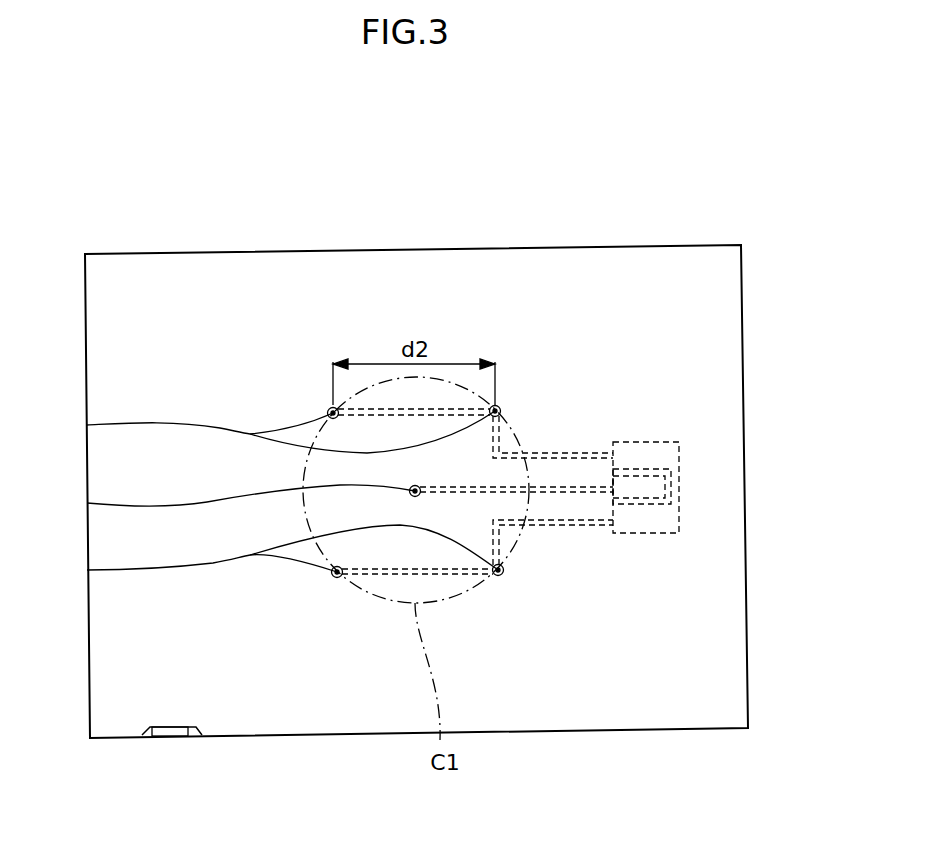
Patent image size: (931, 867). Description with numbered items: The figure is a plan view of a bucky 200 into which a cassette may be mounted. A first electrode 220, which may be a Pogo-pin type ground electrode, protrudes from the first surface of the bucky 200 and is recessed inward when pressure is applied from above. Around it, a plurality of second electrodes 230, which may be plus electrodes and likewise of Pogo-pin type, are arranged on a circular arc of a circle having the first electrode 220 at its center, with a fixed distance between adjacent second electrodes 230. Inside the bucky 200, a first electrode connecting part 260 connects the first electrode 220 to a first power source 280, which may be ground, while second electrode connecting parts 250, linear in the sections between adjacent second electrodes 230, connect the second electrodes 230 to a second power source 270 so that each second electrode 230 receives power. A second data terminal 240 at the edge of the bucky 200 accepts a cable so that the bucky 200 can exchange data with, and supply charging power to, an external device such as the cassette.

The bucky 200 is at (487, 141).
The first electrode 220 is at (87, 503).
The second electrodes 230 is at (87, 425).
The second data terminal 240 is at (170, 738).
The second electrode connecting parts 250 is at (548, 520).
The first electrode connecting part 260 is at (583, 487).
The second power source 270 is at (679, 519).
The first power source 280 is at (663, 487).